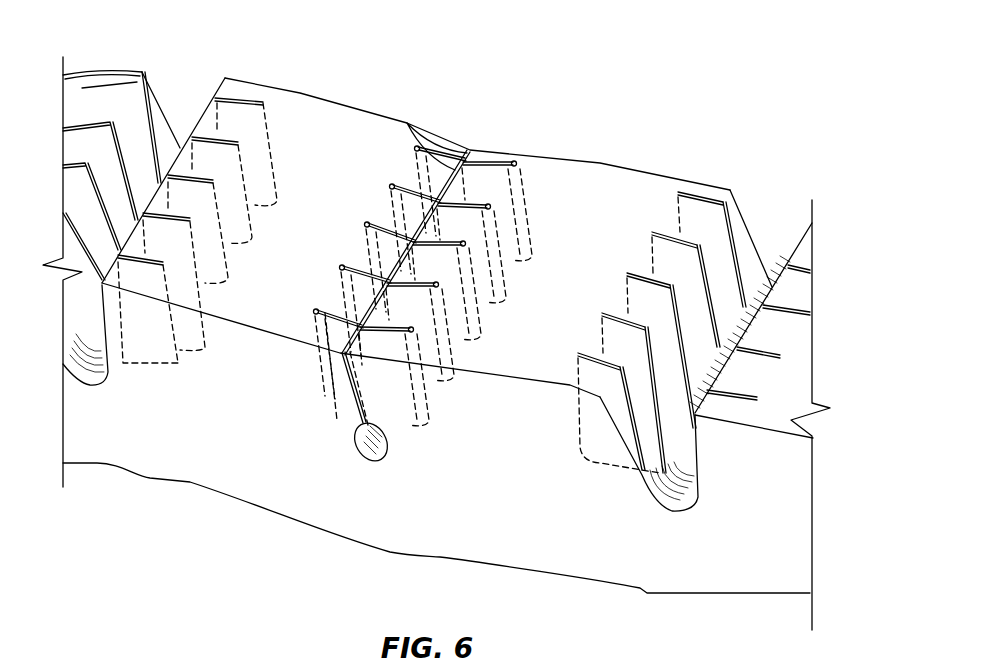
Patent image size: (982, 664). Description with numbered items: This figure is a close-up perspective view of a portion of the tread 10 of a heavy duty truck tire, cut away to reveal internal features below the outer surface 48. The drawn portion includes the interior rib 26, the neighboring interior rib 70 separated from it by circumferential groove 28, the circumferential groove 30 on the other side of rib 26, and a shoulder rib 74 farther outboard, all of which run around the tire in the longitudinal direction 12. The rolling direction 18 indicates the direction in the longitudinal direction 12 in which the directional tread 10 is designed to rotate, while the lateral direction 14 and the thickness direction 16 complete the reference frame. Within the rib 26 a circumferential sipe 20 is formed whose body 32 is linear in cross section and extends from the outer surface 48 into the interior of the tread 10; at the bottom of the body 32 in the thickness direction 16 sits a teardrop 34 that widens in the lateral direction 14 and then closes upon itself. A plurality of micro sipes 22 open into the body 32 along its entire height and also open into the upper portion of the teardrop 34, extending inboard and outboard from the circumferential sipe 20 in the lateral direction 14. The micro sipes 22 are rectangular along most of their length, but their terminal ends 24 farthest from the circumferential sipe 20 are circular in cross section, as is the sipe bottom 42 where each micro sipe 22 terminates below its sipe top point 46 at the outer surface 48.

The tread 10 is at (620, 180).
The longitudinal direction 12 is at (863, 223).
The lateral direction 14 is at (750, 378).
The thickness direction 16 is at (230, 403).
The rolling direction 18 is at (812, 223).
The circumferential sipe 20 is at (440, 152).
The micro sipes 22 is at (473, 203).
The terminal ends 24 is at (395, 185).
The rib 26 is at (298, 107).
The circumferential groove 28 is at (152, 108).
The circumferential groove 30 is at (682, 490).
The body 32 is at (348, 392).
The teardrop 34 is at (356, 446).
The sipe bottom 42 is at (433, 385).
The sipe top point 46 is at (430, 288).
The outer surface 48 is at (288, 250).
The interior rib 70 is at (72, 77).
The shoulder rib 74 is at (802, 357).